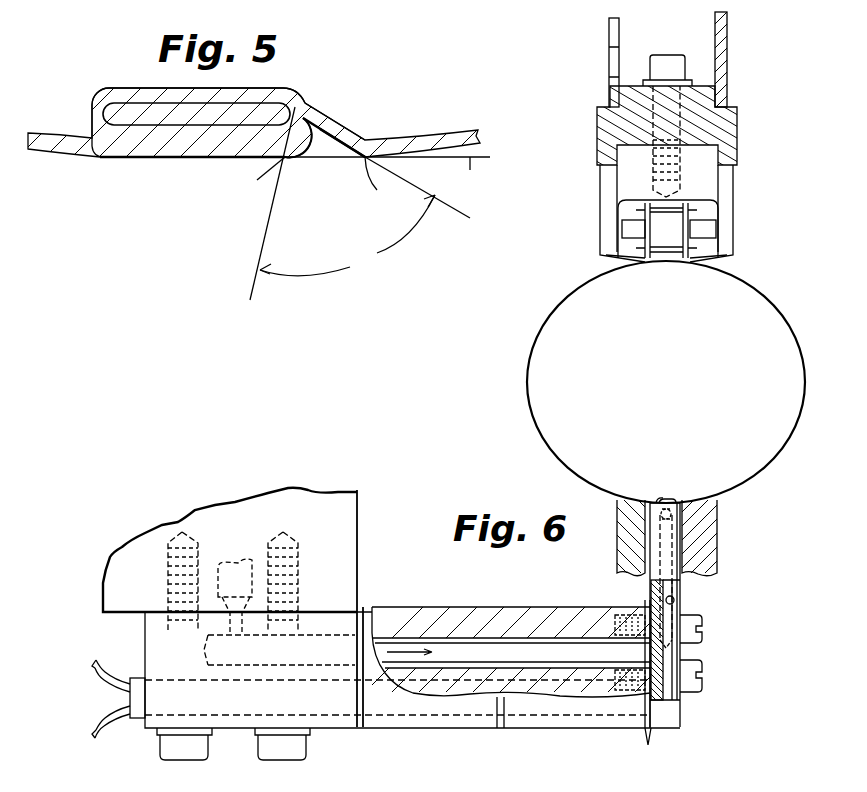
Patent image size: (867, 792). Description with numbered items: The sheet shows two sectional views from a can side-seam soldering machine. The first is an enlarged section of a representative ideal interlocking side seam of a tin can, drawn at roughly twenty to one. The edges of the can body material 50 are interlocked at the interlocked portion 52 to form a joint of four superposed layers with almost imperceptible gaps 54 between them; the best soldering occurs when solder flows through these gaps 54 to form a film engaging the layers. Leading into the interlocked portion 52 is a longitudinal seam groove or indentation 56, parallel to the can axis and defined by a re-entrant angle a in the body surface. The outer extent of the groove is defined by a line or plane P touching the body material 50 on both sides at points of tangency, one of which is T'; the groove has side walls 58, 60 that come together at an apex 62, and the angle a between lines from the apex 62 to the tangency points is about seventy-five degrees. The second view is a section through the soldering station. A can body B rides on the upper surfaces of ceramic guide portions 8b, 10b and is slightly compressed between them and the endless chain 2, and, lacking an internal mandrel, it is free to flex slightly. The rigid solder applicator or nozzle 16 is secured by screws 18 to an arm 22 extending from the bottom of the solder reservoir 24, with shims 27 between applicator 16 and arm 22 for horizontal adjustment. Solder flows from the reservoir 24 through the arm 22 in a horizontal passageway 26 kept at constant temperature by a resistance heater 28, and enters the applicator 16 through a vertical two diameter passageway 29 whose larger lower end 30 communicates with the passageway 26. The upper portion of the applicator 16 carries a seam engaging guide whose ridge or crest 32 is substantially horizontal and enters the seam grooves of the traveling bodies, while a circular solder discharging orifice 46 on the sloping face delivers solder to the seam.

In FIG. 5, the can body material 50 is at (55, 134).
In FIG. 5, the interlocked portion 52 is at (157, 88).
In FIG. 6, the interlocked portion 52 is at (662, 500).
In FIG. 5, the gaps between layers 54 is at (137, 123).
In FIG. 5, the longitudinal seam groove or indentation 56 is at (320, 147).
In FIG. 5, the side wall of re-entrant groove 58 is at (305, 140).
In FIG. 5, the side wall of re-entrant groove 60 is at (332, 140).
In FIG. 5, the apex 62 is at (297, 103).
In FIG. 5, the line or plane of tangency P is at (387, 176).
In FIG. 5, the point of tangency T' is at (262, 203).
In FIG. 5, the re-entrant angle a is at (347, 235).
In FIG. 6, the endless chain 2 is at (650, 232).
In FIG. 6, the can body B is at (759, 264).
In FIG. 6, the ceramic guide rail portion 8b is at (617, 543).
In FIG. 6, the ceramic guide rail portion 10b is at (718, 546).
In FIG. 6, the ridge or crest 32 is at (668, 500).
In FIG. 6, the solder discharging orifice 46 is at (676, 505).
In FIG. 6, the vertical two diameter passageway 29 is at (683, 513).
In FIG. 6, the solder applicator or nozzle 16 is at (682, 590).
In FIG. 6, the lower or larger end of passageway 30 is at (680, 600).
In FIG. 6, the screws 18 is at (702, 672).
In FIG. 6, the horizontal passageway 26 is at (496, 642).
In FIG. 6, the solder reservoir 24 is at (357, 532).
In FIG. 6, the arm 22 is at (580, 732).
In FIG. 6, the shims 27 is at (648, 742).
In FIG. 6, the resistance heater 28 is at (135, 715).